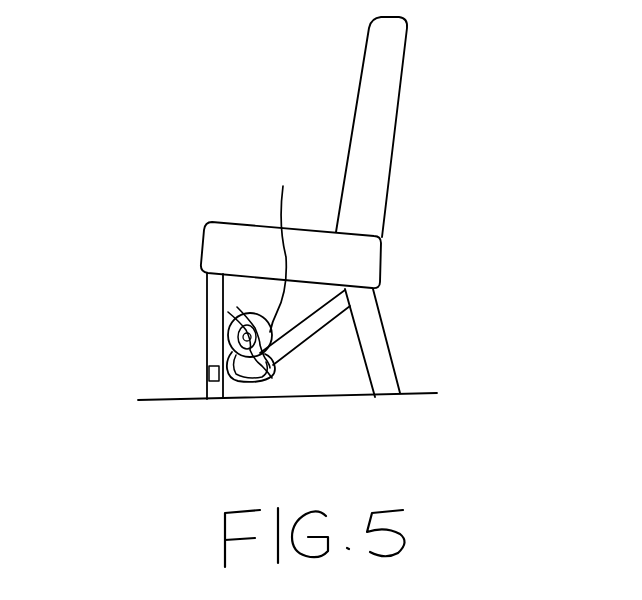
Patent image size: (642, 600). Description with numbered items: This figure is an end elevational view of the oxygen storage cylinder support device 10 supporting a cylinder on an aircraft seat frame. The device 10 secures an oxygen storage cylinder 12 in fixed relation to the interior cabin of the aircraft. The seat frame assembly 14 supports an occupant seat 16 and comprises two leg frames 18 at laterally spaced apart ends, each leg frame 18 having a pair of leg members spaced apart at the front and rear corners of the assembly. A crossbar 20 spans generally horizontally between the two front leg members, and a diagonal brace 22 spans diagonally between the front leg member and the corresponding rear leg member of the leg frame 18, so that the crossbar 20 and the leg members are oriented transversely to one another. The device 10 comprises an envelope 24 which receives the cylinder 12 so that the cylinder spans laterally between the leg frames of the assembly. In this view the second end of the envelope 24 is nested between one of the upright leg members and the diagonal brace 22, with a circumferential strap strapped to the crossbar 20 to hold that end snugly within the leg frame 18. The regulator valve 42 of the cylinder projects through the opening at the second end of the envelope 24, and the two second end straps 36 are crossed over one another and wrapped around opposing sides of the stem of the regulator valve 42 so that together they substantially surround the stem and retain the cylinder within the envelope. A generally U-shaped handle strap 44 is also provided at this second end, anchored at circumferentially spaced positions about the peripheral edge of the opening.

The oxygen storage cylinder support device 10 is at (97, 303).
The oxygen storage cylinder 12 is at (236, 330).
The seat frame assembly 14 is at (510, 217).
The occupant seat 16 is at (443, 113).
The leg frame 18 is at (540, 326).
The crossbar 20 is at (208, 378).
The diagonal brace 22 is at (301, 447).
The envelope 24 is at (280, 242).
The second end strap 36 is at (228, 352).
The regulator valve 42 is at (231, 432).
The handle strap 44 is at (255, 457).